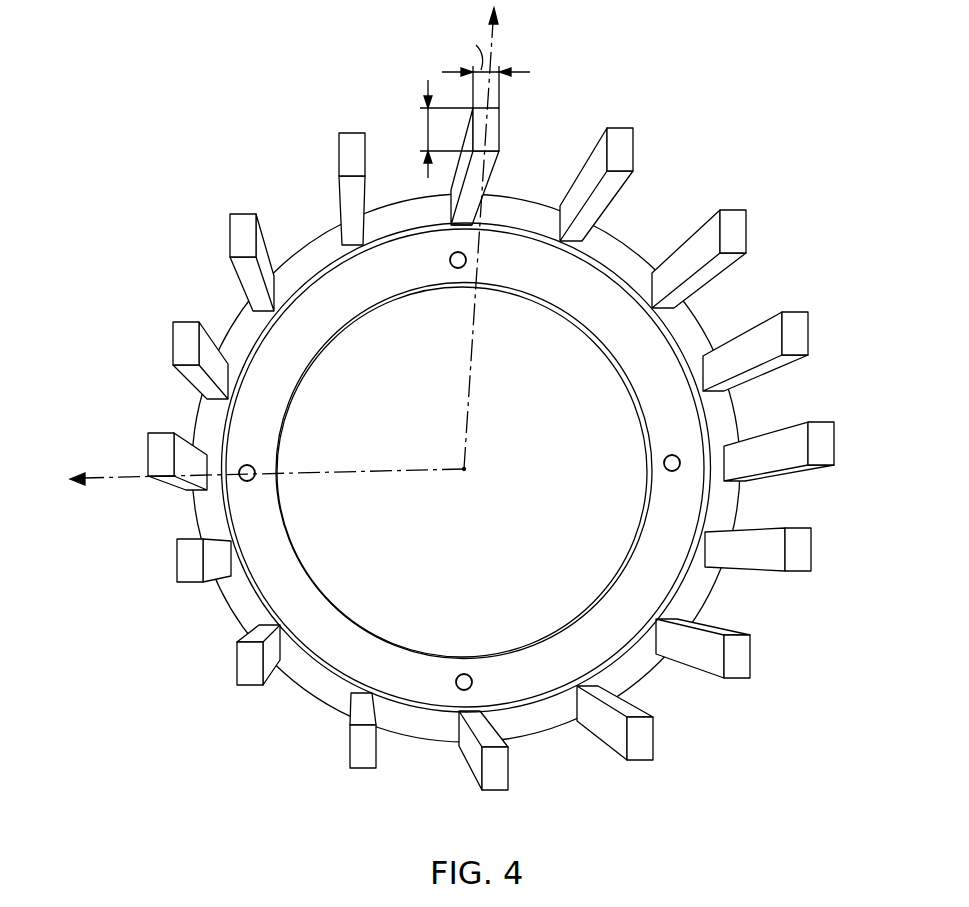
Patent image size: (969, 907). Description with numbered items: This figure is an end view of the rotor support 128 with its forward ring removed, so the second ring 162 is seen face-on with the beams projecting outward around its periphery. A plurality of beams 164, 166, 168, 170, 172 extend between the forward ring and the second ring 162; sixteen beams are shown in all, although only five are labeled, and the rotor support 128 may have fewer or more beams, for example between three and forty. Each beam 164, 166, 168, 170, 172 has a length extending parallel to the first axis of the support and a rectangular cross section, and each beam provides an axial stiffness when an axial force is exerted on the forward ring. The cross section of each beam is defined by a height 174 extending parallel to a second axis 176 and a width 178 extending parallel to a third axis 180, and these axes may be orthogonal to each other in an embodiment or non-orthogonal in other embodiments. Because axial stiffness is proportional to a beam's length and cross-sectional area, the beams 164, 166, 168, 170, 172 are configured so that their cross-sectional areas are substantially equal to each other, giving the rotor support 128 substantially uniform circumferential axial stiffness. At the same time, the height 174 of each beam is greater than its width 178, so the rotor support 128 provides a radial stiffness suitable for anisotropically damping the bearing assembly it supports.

The rotor support 128 is at (469, 399).
The second ring 162 is at (626, 253).
The beam 164 is at (470, 182).
The beam 166 is at (633, 146).
The beam 168 is at (728, 269).
The beam 170 is at (784, 366).
The beam 172 is at (798, 473).
The height 174 is at (498, 120).
The second axis 176 is at (499, 42).
The width 178 is at (477, 153).
The third axis 180 is at (96, 482).